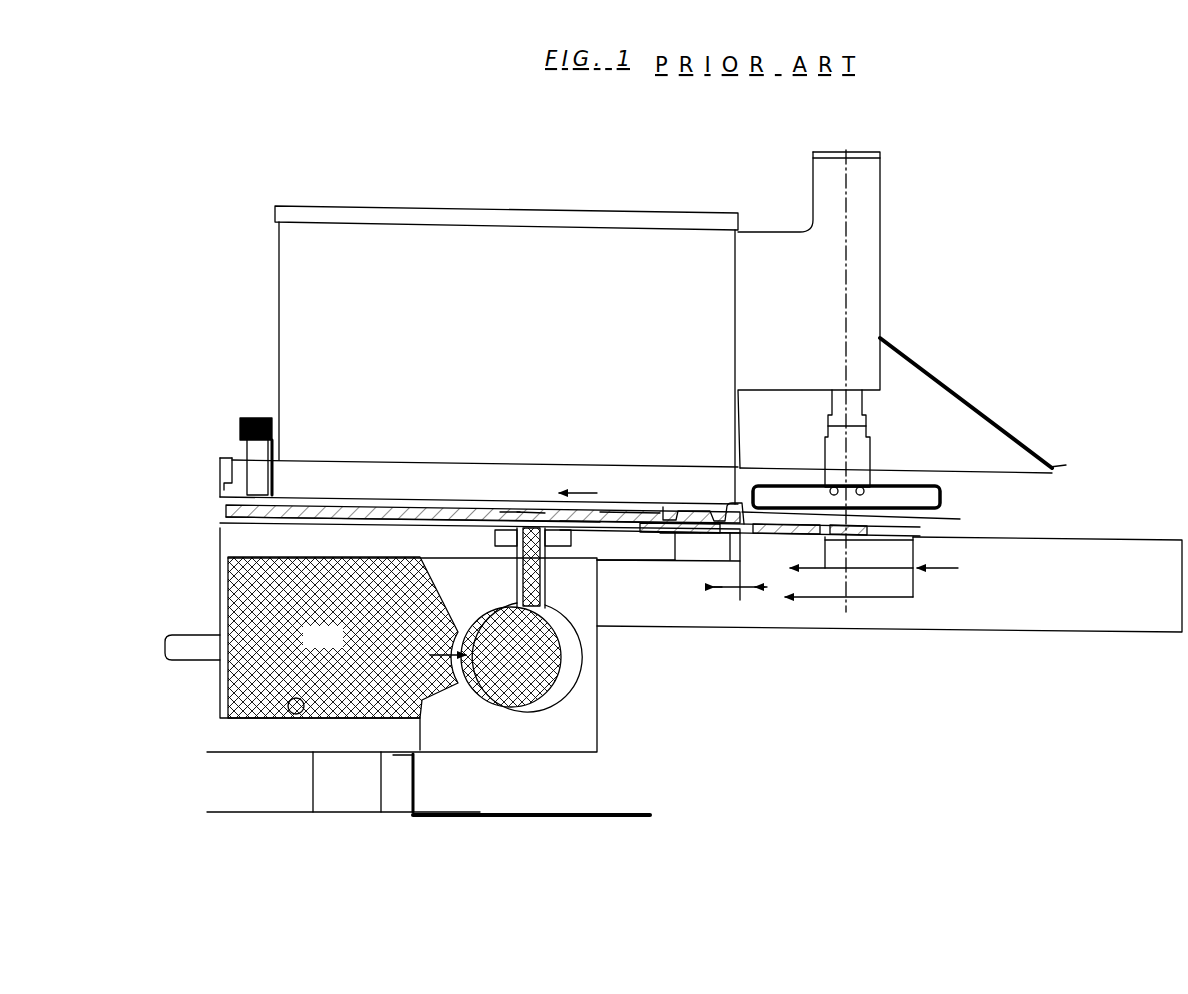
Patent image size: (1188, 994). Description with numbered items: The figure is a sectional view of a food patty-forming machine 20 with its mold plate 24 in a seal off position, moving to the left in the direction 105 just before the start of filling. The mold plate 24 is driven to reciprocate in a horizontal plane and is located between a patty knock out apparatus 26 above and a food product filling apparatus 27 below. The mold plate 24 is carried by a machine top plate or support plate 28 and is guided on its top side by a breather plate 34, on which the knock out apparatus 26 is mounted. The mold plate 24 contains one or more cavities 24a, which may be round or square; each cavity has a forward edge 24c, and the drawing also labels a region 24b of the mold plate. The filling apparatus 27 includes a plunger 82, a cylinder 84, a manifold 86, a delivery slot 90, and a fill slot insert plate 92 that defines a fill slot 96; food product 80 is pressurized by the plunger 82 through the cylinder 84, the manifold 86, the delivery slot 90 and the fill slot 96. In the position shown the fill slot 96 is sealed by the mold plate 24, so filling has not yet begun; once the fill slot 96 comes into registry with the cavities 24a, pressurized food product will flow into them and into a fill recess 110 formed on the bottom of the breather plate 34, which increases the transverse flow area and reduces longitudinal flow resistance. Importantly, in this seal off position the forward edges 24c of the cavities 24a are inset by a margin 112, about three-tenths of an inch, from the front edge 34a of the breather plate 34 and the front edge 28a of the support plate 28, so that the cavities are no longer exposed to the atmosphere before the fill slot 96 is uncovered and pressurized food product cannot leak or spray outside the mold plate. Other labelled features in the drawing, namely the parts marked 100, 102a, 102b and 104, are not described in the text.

The food patty-forming machine 20 is at (910, 166).
The patty knock out apparatus 26 is at (892, 246).
The breather plate 34 is at (333, 508).
The front edge of the breather plate 34a is at (960, 519).
The support plate 28 is at (236, 523).
The front edge of the support plate 28a is at (800, 531).
The mold plate 24 is at (737, 531).
The cavities 24a is at (730, 531).
The strip portion 24b is at (517, 511).
The forward edges of the cavities 24c is at (730, 534).
The food product filling apparatus 27 is at (466, 750).
The food product 80 is at (343, 637).
The plunger 82 is at (220, 628).
The cylinder 84 is at (298, 713).
The manifold 86 is at (532, 702).
The delivery slot 90 is at (546, 584).
The fill slot insert plate 92 is at (500, 548).
The fill slot 96 is at (517, 512).
The clamp block 100 is at (677, 534).
The clamp jaw 102a is at (670, 511).
The clamp jaw 102b is at (720, 509).
The guide 104 is at (508, 511).
The direction 105 is at (588, 481).
The fill recess 110 is at (622, 531).
The margin 112 is at (743, 534).